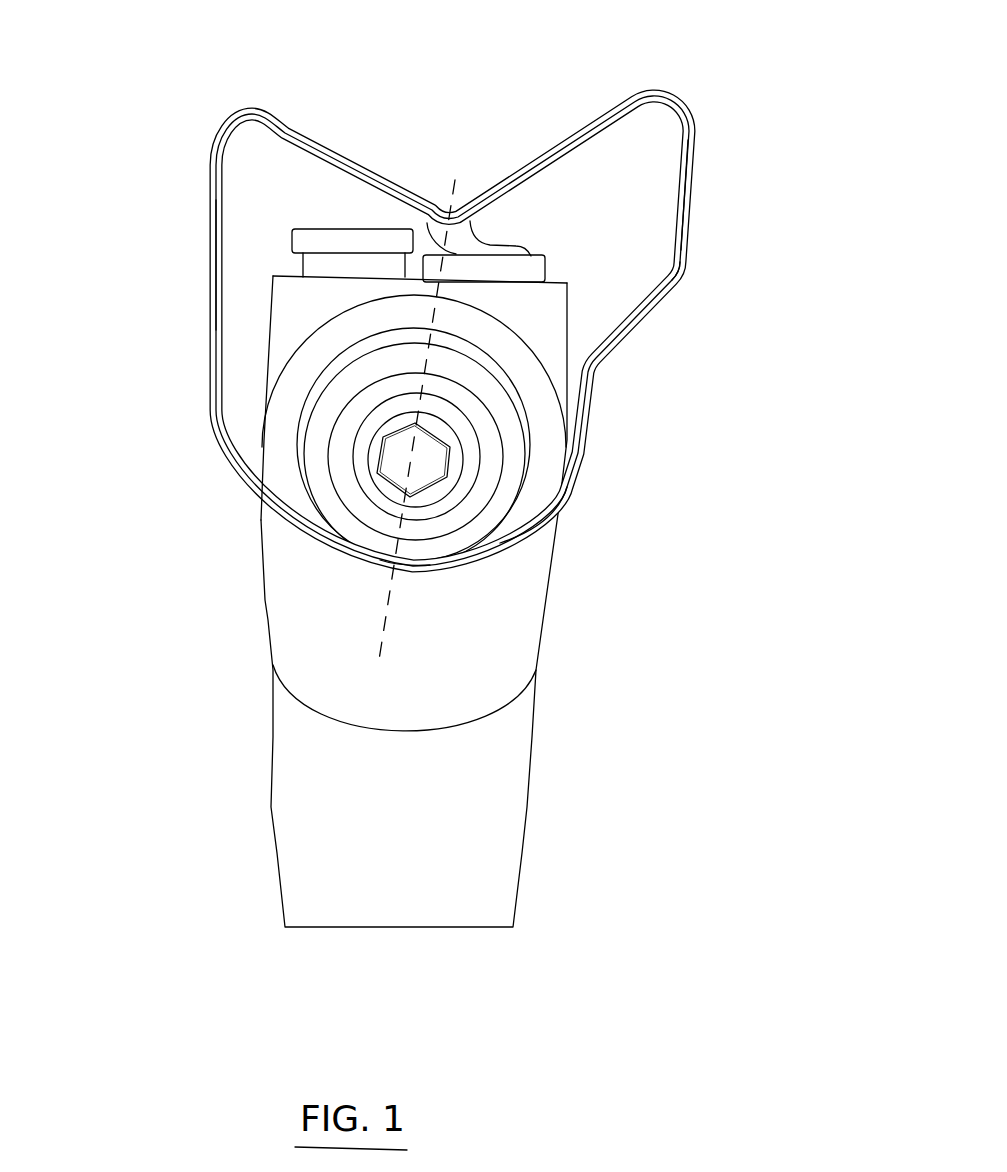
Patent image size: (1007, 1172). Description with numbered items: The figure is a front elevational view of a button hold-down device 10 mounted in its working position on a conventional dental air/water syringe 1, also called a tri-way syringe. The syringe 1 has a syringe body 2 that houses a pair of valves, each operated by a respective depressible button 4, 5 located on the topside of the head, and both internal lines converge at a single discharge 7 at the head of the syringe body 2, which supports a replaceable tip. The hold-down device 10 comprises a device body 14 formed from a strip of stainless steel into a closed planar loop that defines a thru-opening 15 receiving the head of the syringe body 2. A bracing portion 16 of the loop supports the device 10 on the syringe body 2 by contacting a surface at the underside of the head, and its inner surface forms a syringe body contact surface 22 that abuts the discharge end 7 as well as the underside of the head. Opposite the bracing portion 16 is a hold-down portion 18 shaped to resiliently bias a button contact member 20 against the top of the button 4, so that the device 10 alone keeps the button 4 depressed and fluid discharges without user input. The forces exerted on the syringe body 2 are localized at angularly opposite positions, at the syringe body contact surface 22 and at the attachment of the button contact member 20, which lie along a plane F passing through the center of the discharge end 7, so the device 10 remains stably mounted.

The dental air/water syringe 1 is at (553, 606).
The syringe body 2 is at (567, 318).
The depressible button 4 is at (537, 255).
The depressible button 5 is at (333, 229).
The discharge 7 is at (370, 463).
The button hold-down device 10 is at (676, 96).
The device body 14 is at (677, 299).
The thru-opening 15 is at (240, 229).
The bracing portion 16 is at (530, 533).
The hold-down portion 18 is at (697, 176).
The button contact member 20 is at (492, 243).
The syringe body contact surface 22 is at (420, 560).
The plane F is at (378, 601).